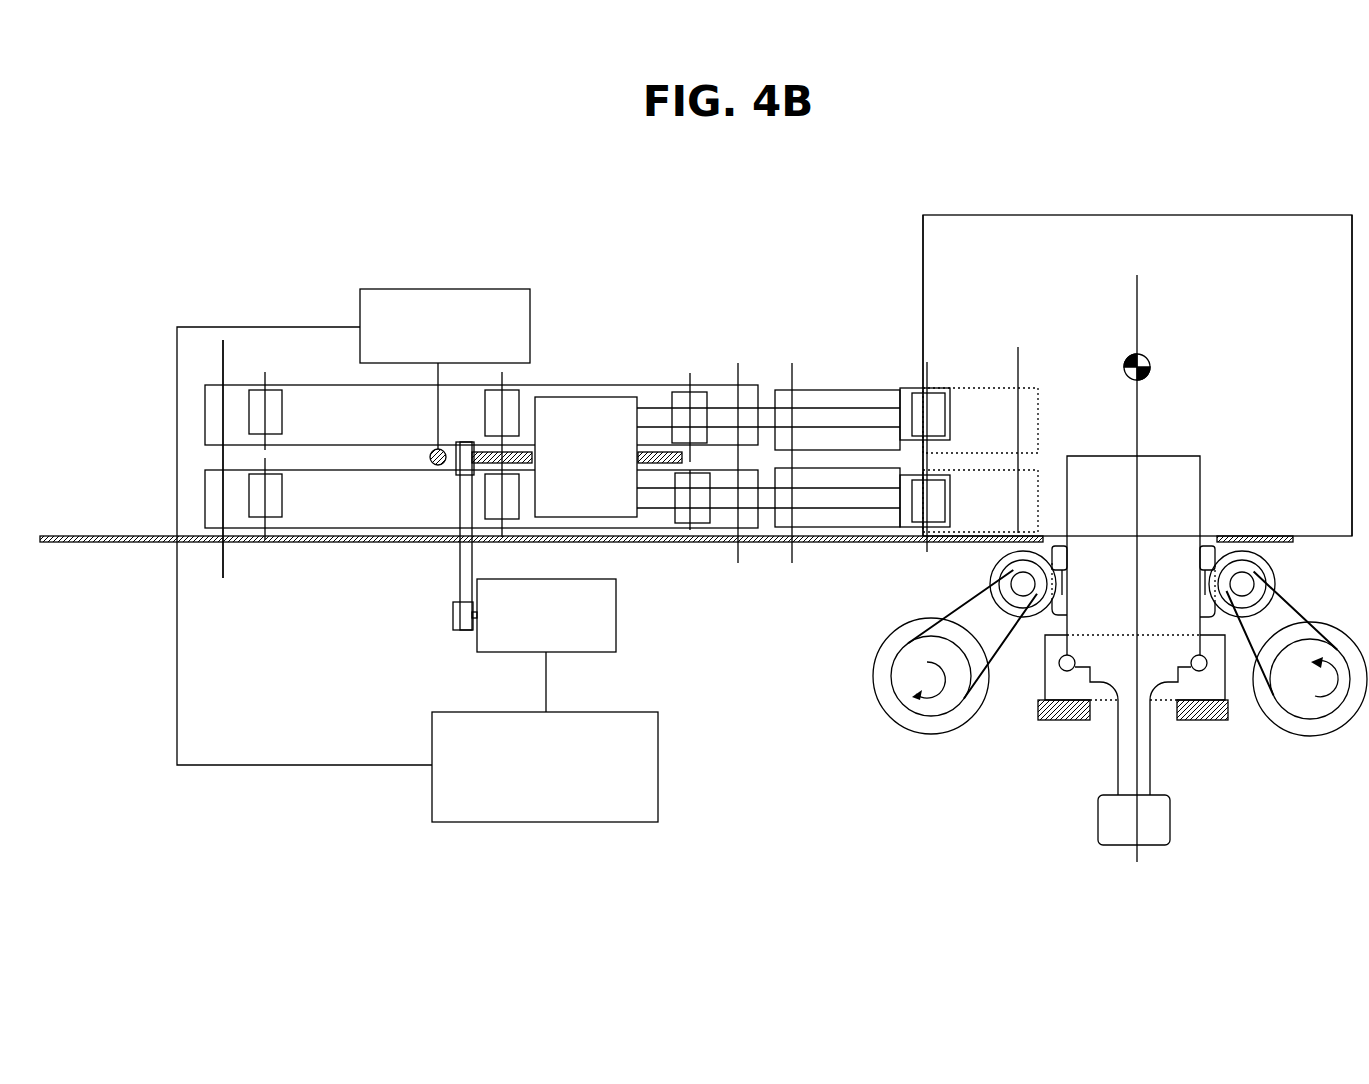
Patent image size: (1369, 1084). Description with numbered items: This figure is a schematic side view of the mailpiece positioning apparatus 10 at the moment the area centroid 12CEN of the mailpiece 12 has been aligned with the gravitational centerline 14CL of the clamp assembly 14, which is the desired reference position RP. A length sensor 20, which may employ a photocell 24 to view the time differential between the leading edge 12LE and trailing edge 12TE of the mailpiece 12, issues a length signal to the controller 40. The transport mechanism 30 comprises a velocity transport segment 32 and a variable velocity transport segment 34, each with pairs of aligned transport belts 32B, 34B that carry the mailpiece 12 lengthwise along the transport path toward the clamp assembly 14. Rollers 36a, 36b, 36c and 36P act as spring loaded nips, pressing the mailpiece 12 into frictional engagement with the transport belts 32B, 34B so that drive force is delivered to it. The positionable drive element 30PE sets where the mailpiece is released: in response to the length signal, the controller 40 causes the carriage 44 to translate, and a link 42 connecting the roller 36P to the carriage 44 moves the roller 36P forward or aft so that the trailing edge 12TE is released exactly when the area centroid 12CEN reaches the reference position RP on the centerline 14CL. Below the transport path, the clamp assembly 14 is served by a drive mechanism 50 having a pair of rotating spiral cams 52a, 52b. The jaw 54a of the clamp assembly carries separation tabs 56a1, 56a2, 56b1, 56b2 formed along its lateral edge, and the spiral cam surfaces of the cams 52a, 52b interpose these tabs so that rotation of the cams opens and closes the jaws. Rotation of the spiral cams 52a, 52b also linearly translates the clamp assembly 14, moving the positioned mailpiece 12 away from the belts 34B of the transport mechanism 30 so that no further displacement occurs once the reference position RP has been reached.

The web handling apparatus 10 is at (673, 262).
The mailpiece 12 is at (1125, 214).
The trailing edge 12TE is at (923, 248).
The leading edge 12LE is at (1352, 252).
The area centroid 12CEN is at (1124, 364).
The reference position RP is at (1132, 318).
The clamp assembly 14 is at (1163, 502).
The gravitational centerline 14CL is at (1132, 538).
The length sensor 20 is at (455, 289).
The photocell 24 is at (428, 460).
The transport mechanism 30 is at (802, 316).
The velocity transport segment 32 is at (690, 356).
The transport belts 32B is at (335, 468).
The variable velocity transport segment 34 is at (797, 355).
The transport belts 34B is at (828, 468).
The roller 36a is at (318, 520).
The roller 36b is at (520, 500).
The roller 36c is at (677, 523).
The roller 36P is at (948, 412).
The positionable drive element 30PE is at (717, 602).
The controller 40 is at (660, 770).
The link 42 is at (852, 405).
The carriage 44 is at (577, 518).
The drive mechanism 50 is at (1052, 858).
The spiral cam 52a is at (1028, 618).
The spiral cam 52b is at (1242, 618).
The jaw 54a is at (1181, 478).
The separation tab 56a1 is at (1062, 607).
The separation tab 56a2 is at (1197, 605).
The separation tab 56b1 is at (1053, 535).
The separation tab 56b2 is at (1203, 535).